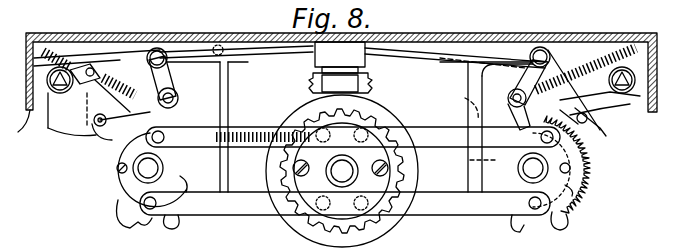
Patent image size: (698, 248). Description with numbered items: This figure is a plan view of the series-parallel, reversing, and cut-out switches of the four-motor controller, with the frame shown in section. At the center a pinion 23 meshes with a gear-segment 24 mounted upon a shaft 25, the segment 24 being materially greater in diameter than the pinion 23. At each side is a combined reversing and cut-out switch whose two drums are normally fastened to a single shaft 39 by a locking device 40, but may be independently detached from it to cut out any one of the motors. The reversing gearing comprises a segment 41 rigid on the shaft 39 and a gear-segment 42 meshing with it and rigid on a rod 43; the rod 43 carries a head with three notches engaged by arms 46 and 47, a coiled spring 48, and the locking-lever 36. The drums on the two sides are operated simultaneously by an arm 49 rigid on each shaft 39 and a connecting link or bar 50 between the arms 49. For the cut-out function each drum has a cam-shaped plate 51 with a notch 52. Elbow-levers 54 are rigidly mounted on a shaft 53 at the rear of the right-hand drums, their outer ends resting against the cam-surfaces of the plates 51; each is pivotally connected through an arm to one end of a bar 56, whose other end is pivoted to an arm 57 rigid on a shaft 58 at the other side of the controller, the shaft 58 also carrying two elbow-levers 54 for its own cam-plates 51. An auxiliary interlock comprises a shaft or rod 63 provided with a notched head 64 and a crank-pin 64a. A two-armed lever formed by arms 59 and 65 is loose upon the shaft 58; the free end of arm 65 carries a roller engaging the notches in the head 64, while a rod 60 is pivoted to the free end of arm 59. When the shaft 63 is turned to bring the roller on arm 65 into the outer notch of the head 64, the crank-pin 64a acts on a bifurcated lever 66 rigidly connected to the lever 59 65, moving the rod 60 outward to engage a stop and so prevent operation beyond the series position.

The pinion 23 is at (370, 78).
The gear-segment 24 is at (356, 168).
The shaft 25 is at (342, 171).
The locking-lever 36 is at (450, 60).
The shaft 39 is at (351, 168).
The locking device 40 is at (365, 230).
The segment 41 is at (588, 168).
The gear-segment 42 is at (600, 135).
The rod 43 is at (644, 72).
The arm 46 is at (560, 74).
The arm 47 is at (520, 88).
The coiled spring 48 is at (600, 37).
The arm 49 is at (184, 184).
The connecting link or bar 50 is at (345, 203).
The cam-shaped plate 51 is at (118, 182).
The notch 52 is at (126, 224).
The shaft 53 is at (542, 47).
The elbow-lever 54 is at (96, 140).
The bar 56 is at (353, 137).
The arm 57 is at (172, 107).
The shaft 58 is at (162, 50).
The arm of two-armed lever 59 is at (216, 46).
The rod 60 is at (236, 128).
The shaft or rod 63 is at (18, 121).
The notched head 64 is at (67, 97).
The crank-pin 64a is at (92, 68).
The arm of two-armed lever 65 is at (122, 102).
The bifurcated lever 66 is at (130, 55).